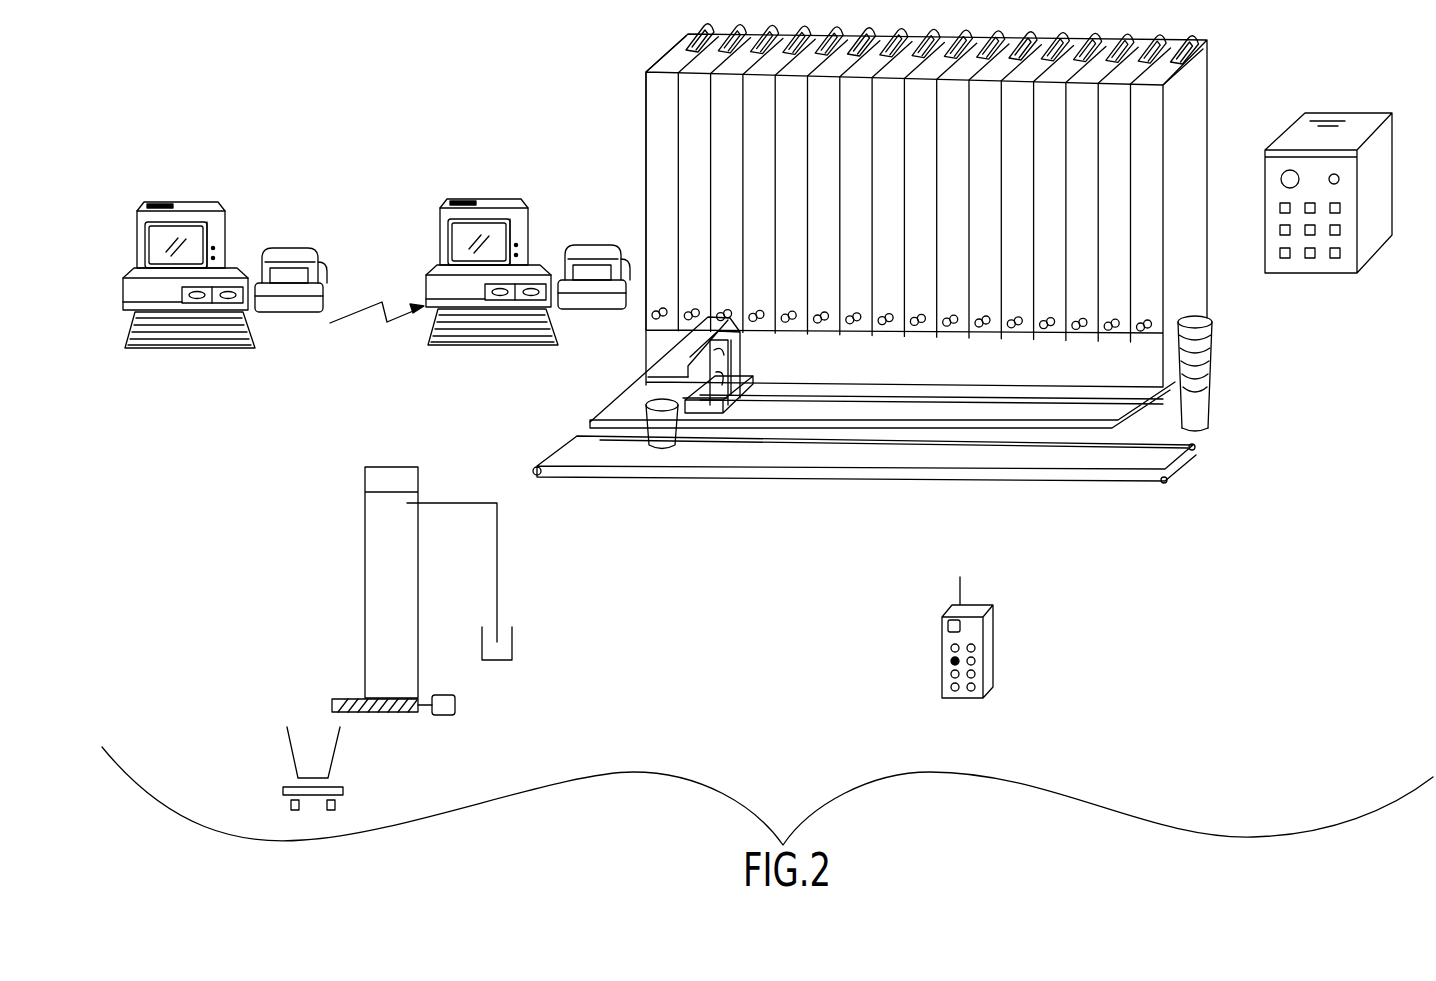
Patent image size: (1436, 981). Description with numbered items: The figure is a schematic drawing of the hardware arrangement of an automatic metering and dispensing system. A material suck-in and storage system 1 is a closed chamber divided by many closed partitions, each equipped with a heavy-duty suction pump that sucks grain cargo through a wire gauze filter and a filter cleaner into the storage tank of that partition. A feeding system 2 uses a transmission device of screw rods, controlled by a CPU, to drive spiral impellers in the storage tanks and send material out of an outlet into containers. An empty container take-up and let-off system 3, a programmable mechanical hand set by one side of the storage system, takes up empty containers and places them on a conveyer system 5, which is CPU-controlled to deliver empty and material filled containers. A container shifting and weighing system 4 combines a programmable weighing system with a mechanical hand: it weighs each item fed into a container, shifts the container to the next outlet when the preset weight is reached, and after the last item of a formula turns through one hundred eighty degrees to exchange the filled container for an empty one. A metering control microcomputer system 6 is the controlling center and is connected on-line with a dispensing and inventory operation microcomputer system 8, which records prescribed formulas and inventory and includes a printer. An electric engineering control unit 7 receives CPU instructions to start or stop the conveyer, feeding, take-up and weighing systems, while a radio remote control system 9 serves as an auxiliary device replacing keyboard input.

The material suck-in and storage system 1 is at (1197, 97).
The feeding system 2 is at (722, 313).
The empty container take-up and let-off system 3 is at (690, 372).
The container shifting and weighing system 4 is at (745, 396).
The conveyer system 5 is at (590, 472).
The metering control microcomputer system 6 is at (517, 198).
The electric engineering control unit 7 is at (1300, 268).
The dispensing and inventory operation microcomputer system 8 is at (223, 203).
The radio remote control system 9 is at (977, 642).